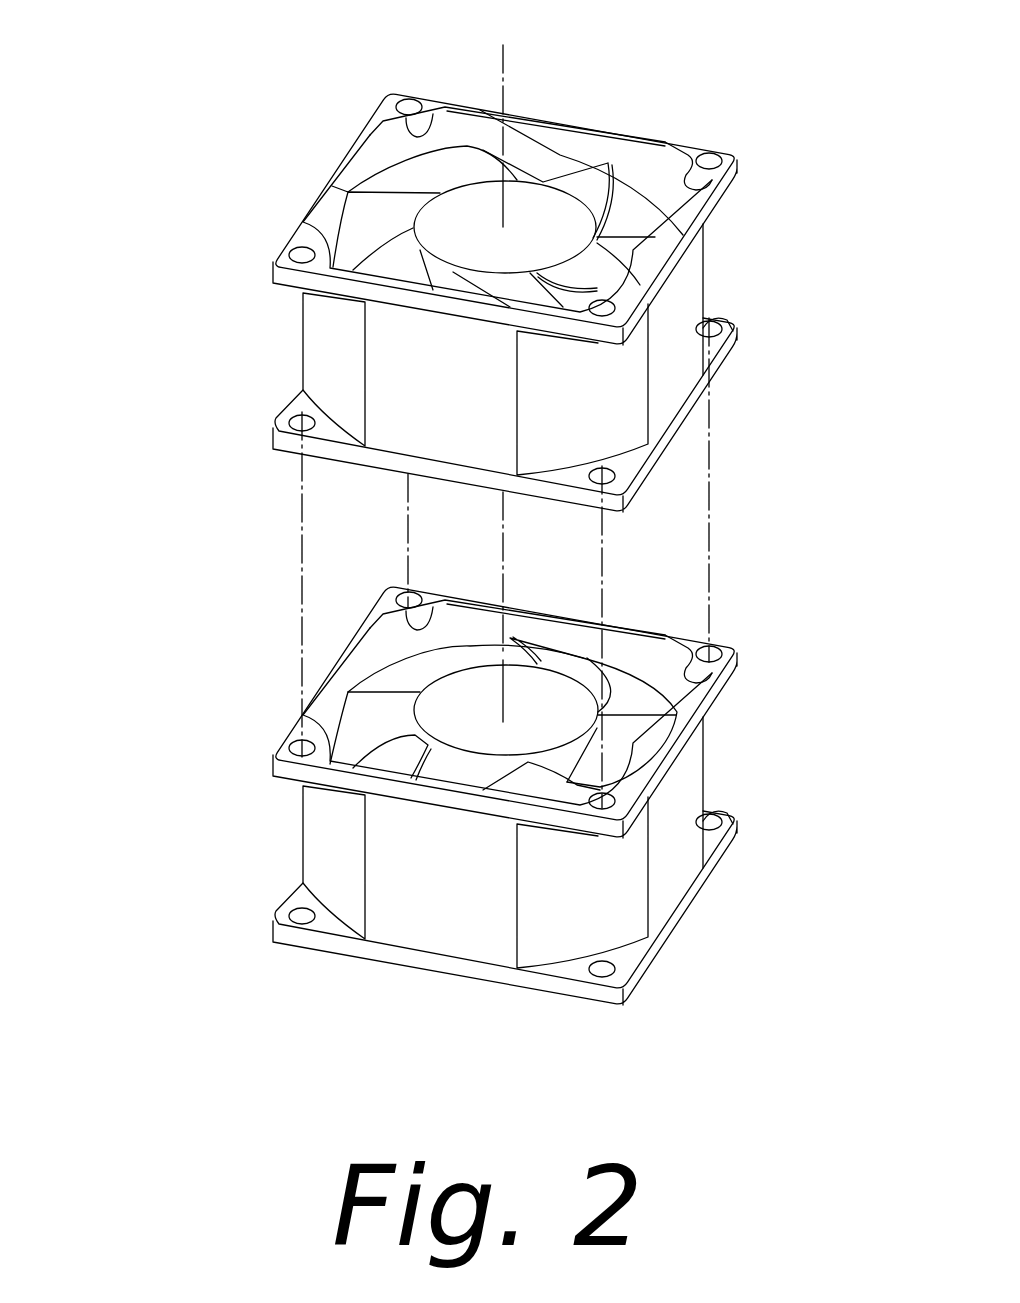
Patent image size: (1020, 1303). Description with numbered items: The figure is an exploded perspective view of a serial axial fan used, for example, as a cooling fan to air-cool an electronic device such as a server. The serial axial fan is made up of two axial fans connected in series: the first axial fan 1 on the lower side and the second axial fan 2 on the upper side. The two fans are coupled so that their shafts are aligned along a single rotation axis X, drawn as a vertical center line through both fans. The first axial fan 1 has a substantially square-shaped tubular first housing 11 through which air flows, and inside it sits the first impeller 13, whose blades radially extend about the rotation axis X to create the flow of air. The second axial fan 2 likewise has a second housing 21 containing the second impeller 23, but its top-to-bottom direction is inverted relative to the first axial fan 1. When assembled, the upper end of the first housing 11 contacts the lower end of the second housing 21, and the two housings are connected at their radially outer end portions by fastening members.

The first axial fan 1 is at (452, 778).
The second axial fan 2 is at (461, 266).
The first housing 11 is at (697, 773).
The first impeller 13 is at (617, 730).
The second housing 21 is at (690, 274).
The second impeller 23 is at (588, 180).
The rotation axis X is at (505, 361).